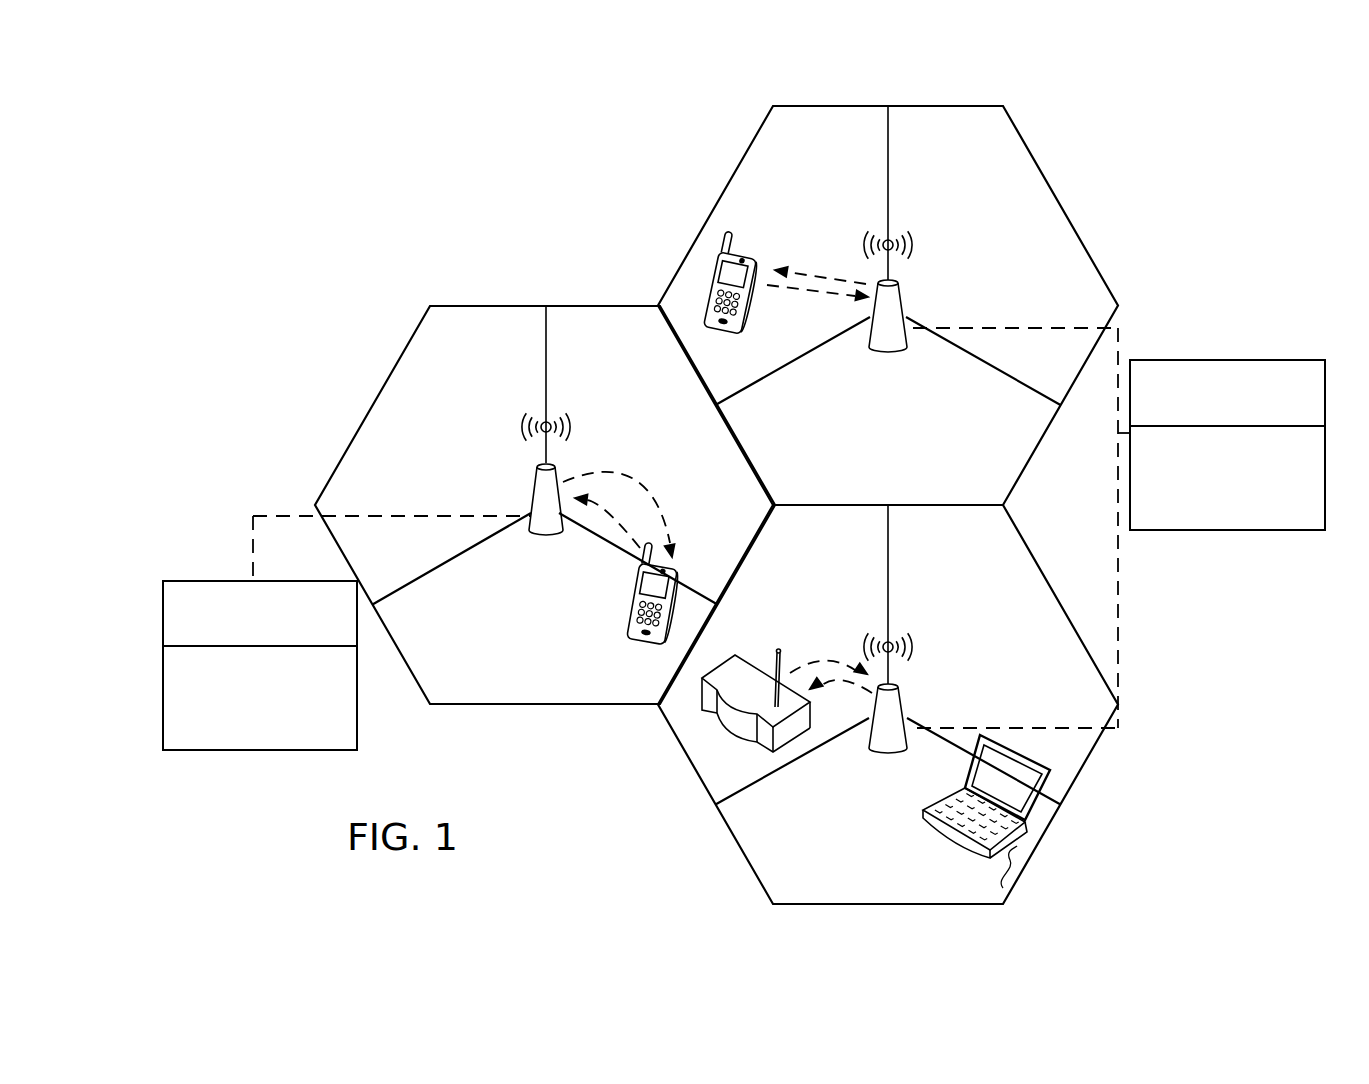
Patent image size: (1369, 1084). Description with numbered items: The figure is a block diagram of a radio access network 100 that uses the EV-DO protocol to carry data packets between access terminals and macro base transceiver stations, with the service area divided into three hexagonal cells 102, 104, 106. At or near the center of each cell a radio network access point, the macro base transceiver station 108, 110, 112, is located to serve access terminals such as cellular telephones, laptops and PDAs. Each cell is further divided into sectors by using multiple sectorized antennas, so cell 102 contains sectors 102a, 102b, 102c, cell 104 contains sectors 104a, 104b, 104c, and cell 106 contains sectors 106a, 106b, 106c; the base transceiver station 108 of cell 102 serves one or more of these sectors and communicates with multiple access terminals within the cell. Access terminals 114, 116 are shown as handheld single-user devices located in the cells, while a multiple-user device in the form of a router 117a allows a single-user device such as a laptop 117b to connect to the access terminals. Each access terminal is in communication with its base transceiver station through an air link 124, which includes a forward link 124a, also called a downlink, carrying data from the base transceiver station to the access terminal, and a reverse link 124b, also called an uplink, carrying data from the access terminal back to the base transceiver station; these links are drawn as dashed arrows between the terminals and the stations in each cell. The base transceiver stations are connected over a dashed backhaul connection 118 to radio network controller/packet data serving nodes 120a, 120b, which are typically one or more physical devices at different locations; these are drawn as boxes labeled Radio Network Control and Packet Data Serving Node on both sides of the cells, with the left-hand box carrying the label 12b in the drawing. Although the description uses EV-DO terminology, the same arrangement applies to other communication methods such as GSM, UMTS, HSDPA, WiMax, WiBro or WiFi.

The radio access network 100 is at (555, 163).
The cell 102 is at (369, 378).
The sector 102a is at (407, 461).
The sector 102b is at (578, 396).
The sector 102c is at (514, 671).
The cell 104 is at (1050, 158).
The sector 104a is at (769, 171).
The sector 104b is at (965, 266).
The sector 104c is at (879, 447).
The cell 106 is at (682, 808).
The sector 106a is at (818, 556).
The sector 106b is at (990, 676).
The sector 106c is at (836, 878).
The macro base transceiver station 108 is at (520, 522).
The macro base transceiver station 110 is at (862, 348).
The macro base transceiver station 112 is at (866, 752).
The access terminal 114 is at (757, 330).
The access terminal 116 is at (628, 625).
The router 117a is at (727, 717).
The laptop 117b is at (963, 847).
The backhaul connection 118 is at (253, 547).
The radio network controller/packet data serving node 120a is at (163, 616).
The radio network controller/packet data serving node 120b is at (1227, 478).
The packet data serving node 12b is at (260, 698).
The air link 124 is at (662, 511).
The forward link 124a is at (647, 491).
The reverse link 124b is at (608, 514).